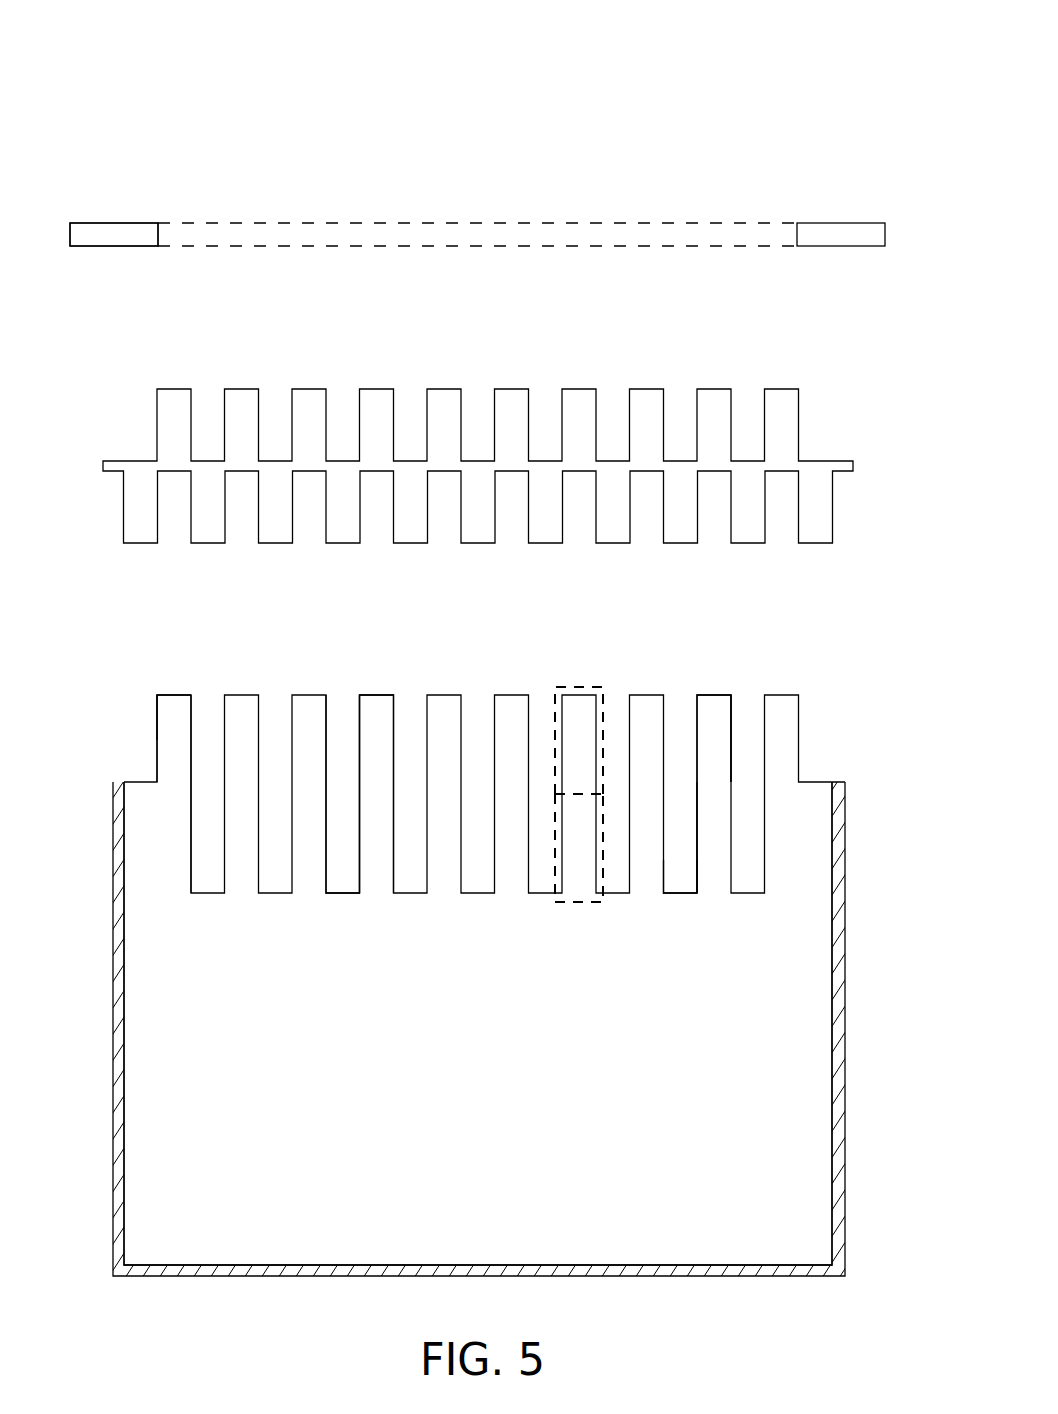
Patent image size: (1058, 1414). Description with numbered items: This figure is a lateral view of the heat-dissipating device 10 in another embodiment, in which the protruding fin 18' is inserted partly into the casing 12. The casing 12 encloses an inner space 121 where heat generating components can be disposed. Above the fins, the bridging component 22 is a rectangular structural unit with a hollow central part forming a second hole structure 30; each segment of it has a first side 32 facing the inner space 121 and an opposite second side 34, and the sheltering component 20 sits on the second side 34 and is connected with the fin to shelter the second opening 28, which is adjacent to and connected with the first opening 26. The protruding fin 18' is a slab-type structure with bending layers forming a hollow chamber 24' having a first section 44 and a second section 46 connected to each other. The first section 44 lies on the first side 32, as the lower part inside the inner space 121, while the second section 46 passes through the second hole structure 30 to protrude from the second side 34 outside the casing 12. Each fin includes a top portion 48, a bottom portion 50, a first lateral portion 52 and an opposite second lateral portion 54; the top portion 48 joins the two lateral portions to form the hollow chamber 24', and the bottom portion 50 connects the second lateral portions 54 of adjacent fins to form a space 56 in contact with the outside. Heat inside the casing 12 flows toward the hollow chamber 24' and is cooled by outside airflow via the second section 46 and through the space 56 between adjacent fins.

The heat-dissipating device 10 is at (742, 93).
The casing 12 is at (813, 1276).
The inner space 121 is at (187, 1110).
The protruding fin 18' is at (474, 751).
The sheltering component 20 is at (710, 425).
The bridging component 22 is at (838, 235).
The hollow chamber 24' is at (380, 832).
The first opening 26 is at (175, 775).
The second opening 28 is at (165, 727).
The second hole structure 30 is at (490, 235).
The first side 32 is at (120, 246).
The second side 34 is at (120, 223).
The first section 44 is at (578, 902).
The second section 46 is at (578, 687).
The top portion 48 is at (714, 695).
The bottom portion 50 is at (680, 893).
The first lateral portion 52 is at (732, 758).
The second lateral portion 54 is at (697, 815).
The space 56 is at (337, 730).